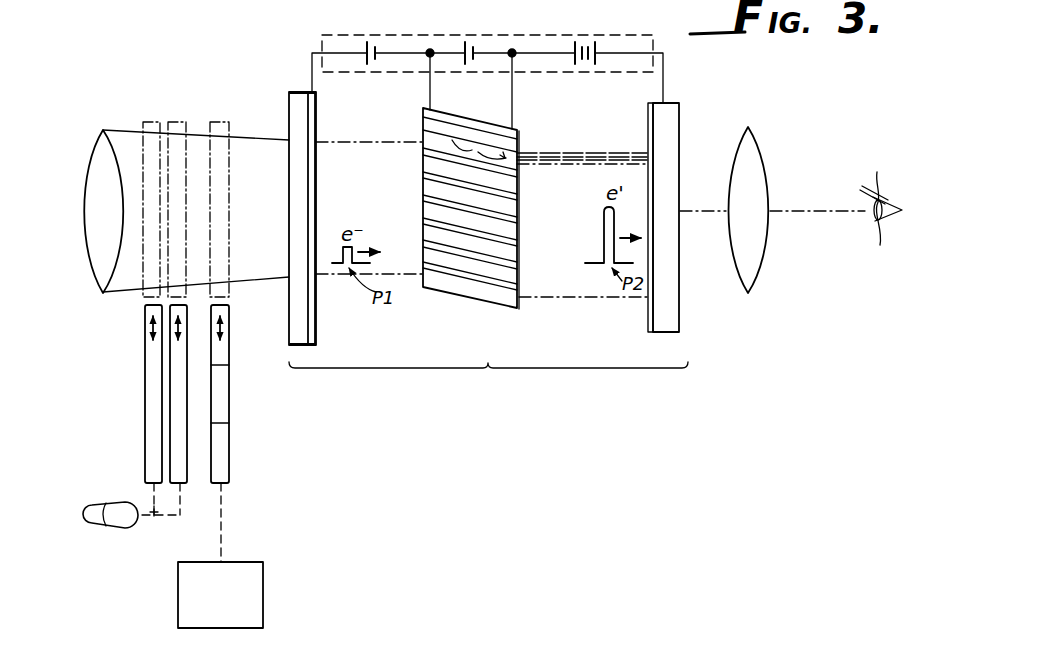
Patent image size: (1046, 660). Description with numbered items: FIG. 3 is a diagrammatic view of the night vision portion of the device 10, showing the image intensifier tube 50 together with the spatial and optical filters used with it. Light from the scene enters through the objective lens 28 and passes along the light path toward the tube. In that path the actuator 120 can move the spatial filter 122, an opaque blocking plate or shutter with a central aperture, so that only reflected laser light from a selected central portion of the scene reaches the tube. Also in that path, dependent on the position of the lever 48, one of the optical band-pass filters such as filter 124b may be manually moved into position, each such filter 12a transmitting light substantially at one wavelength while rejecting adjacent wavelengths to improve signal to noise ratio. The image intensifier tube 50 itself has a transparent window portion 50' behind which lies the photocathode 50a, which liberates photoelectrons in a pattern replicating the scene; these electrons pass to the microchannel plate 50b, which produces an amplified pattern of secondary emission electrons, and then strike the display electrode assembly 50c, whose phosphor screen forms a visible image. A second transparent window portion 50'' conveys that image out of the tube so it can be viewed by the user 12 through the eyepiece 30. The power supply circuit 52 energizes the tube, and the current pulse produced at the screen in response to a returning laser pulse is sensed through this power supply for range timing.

The device 10 is at (776, 313).
The user 12 is at (874, 250).
The filter element 12a is at (146, 322).
The optical band-pass filter 124b is at (172, 380).
The spatial filter 122 is at (226, 455).
The actuator 120 is at (258, 562).
The lever 48 is at (138, 521).
The objective lens 28 is at (103, 130).
The eyepiece 30 is at (757, 272).
The image intensifier tube 50 is at (488, 384).
The transparent window portion 50' is at (281, 218).
The photocathode 50a is at (316, 318).
The microchannel plate 50b is at (452, 90).
The display electrode assembly 50c is at (645, 312).
The transparent window portion 50'' is at (694, 221).
The power supply circuit 52 is at (527, 35).